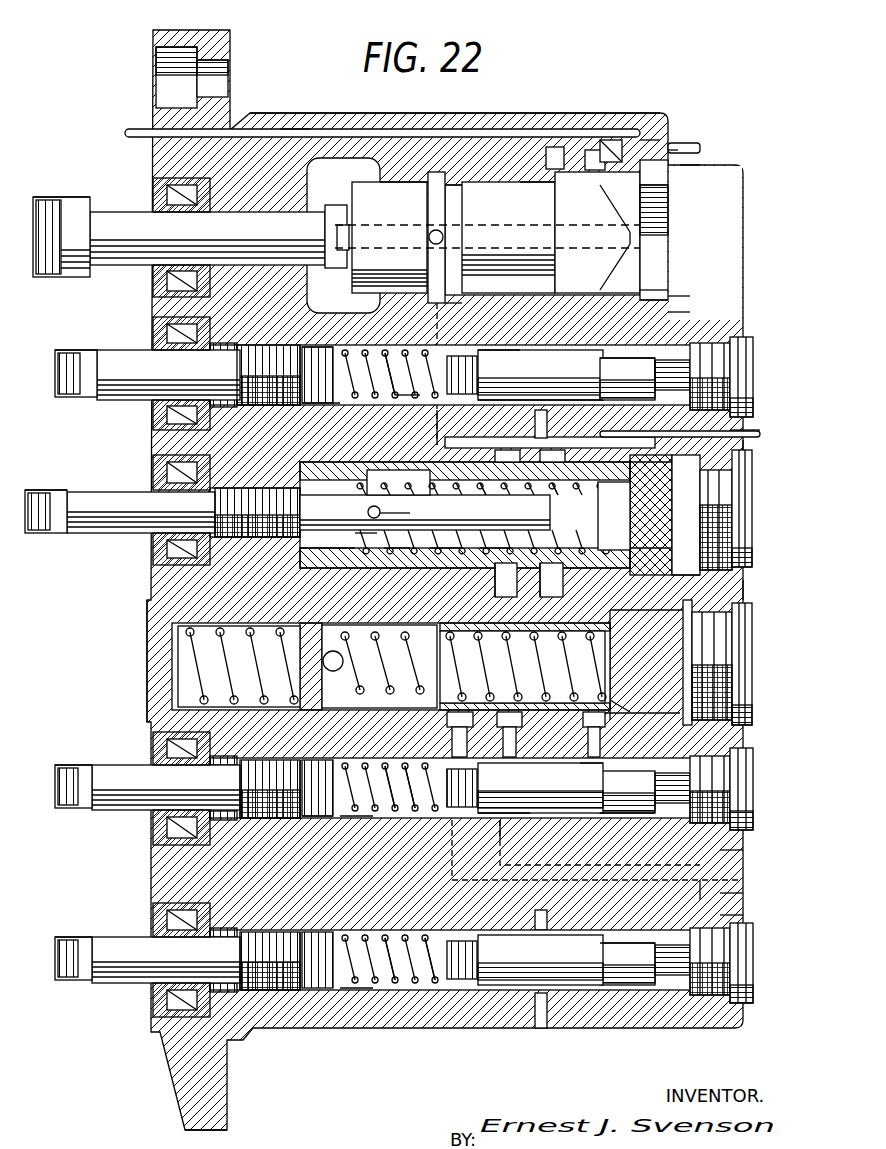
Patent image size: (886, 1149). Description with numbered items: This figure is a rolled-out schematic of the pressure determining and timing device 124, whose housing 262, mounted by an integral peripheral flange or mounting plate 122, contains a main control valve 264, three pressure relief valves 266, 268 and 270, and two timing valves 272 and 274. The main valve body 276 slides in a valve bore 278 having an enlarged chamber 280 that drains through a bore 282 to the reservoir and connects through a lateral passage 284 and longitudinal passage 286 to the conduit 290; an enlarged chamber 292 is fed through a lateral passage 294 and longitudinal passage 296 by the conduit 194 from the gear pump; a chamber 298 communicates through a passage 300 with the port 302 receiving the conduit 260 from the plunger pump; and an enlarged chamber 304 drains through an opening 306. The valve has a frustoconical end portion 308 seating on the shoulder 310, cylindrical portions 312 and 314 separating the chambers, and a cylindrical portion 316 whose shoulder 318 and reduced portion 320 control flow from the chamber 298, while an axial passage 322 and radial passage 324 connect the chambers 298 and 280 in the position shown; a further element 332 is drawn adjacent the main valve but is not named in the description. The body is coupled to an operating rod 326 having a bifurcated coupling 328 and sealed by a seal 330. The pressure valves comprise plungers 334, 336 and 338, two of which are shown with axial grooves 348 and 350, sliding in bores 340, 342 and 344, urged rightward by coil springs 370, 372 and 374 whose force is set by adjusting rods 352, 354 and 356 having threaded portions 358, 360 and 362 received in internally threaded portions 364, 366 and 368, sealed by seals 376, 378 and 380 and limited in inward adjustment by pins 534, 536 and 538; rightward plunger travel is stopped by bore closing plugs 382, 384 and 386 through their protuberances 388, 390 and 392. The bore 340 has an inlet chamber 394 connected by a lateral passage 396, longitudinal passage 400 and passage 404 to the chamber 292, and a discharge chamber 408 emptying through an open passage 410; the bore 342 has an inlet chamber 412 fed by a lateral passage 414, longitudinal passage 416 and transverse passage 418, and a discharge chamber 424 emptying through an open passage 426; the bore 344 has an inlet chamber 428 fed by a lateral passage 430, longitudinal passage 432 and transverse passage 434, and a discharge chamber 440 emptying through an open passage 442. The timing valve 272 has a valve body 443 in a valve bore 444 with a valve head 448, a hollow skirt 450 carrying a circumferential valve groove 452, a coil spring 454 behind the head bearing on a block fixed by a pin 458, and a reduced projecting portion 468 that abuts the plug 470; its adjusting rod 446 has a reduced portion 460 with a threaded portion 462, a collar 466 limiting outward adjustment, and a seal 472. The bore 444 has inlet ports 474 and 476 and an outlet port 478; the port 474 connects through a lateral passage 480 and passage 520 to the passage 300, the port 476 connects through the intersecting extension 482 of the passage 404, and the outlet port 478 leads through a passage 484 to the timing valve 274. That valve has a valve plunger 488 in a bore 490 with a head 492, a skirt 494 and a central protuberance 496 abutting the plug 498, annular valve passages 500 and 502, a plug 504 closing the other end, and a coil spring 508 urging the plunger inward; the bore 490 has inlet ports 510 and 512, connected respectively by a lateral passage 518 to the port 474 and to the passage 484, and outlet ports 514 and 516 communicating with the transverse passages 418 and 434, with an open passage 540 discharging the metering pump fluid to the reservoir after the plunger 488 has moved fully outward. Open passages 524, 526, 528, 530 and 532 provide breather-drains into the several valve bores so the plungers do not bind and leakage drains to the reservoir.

The mounting foot 122 is at (226, 1118).
The valve housing 124 is at (672, 102).
The rod 194 is at (705, 148).
The stem 260 is at (755, 443).
The cover plate 262 is at (258, 113).
The upper shaft assembly 264 is at (125, 200).
The second shaft assembly 266 is at (120, 345).
The fourth shaft assembly 268 is at (125, 763).
The fifth shaft assembly 270 is at (125, 930).
The third shaft assembly 272 is at (125, 482).
The spring chamber assembly 274 is at (140, 632).
The valve body 276 is at (540, 168).
The valve spool 278 is at (487, 195).
The bore 280 is at (690, 178).
The threaded plug 282 is at (660, 228).
The housing cap 284 is at (645, 140).
The rod guide 286 is at (292, 129).
The control rod 290 is at (135, 128).
The port 292 is at (590, 150).
The port 294 is at (560, 150).
The port 296 is at (678, 147).
The valve plate 298 is at (436, 172).
The passage 300 is at (430, 434).
The plunger 302 is at (458, 527).
The shoulder 304 is at (318, 185).
The stem 306 is at (595, 400).
The thread 308 is at (648, 208).
The plug face 310 is at (650, 290).
The port 312 is at (605, 140).
The passage 314 is at (453, 185).
The valve member 316 is at (364, 183).
The spline 318 is at (425, 285).
The groove 320 is at (410, 185).
The spool land 322 is at (578, 230).
The key 324 is at (430, 238).
The shaft 326 is at (130, 258).
The knurled head 328 is at (50, 268).
The bearing 330 is at (160, 185).
The passage 332 is at (456, 312).
The passage 334 is at (522, 360).
The passage 336 is at (505, 815).
The plunger 338 is at (568, 940).
The spring 340 is at (405, 348).
The spring 342 is at (415, 848).
The spring 344 is at (455, 992).
The stem 348 is at (600, 812).
The stem 350 is at (610, 950).
The shaft 352 is at (108, 393).
The shaft 354 is at (112, 808).
The shaft 356 is at (112, 980).
The threaded section 358 is at (258, 405).
The threaded section 360 is at (255, 820).
The threaded section 362 is at (268, 992).
The bushing 364 is at (292, 405).
The bushing 366 is at (293, 820).
The bushing 368 is at (328, 992).
The spring seat 370 is at (396, 400).
The spring seat 372 is at (365, 820).
The spring seat 374 is at (400, 995).
The bearing 376 is at (160, 335).
The bearing 378 is at (160, 740).
The bearing 380 is at (160, 905).
The nut 382 is at (745, 352).
The nut 384 is at (746, 758).
The nut 386 is at (746, 952).
The threaded insert 388 is at (675, 352).
The threaded insert 390 is at (720, 790).
The threaded insert 392 is at (745, 915).
The lock ring 394 is at (680, 312).
The washer 396 is at (682, 296).
The seat 400 is at (625, 330).
The passage 404 is at (458, 437).
The valve plunger 408 is at (528, 386).
The stem end 410 is at (740, 430).
The thread 412 is at (746, 800).
The thread 414 is at (745, 705).
The passage 416 is at (620, 713).
The valve plunger 418 is at (528, 800).
The stem 424 is at (580, 808).
The passage 426 is at (745, 852).
The passage 428 is at (745, 893).
The passage 430 is at (702, 890).
The passage 432 is at (525, 860).
The passage 434 is at (440, 865).
The passage 440 is at (545, 922).
The passage 442 is at (540, 1028).
The sleeve 443 is at (632, 520).
The spring retainer 444 is at (380, 482).
The shaft 446 is at (80, 530).
The threaded sleeve 448 is at (702, 524).
The spring 450 is at (492, 562).
The spring cage 452 is at (604, 520).
The spring 454 is at (398, 562).
The threaded section 458 is at (248, 568).
The collar 460 is at (358, 495).
The collar 462 is at (340, 545).
The wall 466 is at (330, 565).
The sleeve flange 468 is at (700, 500).
The nut 470 is at (748, 538).
The bearing 472 is at (160, 462).
The thread 474 is at (748, 560).
The spring 476 is at (552, 512).
The spring 478 is at (495, 492).
The sleeve end 480 is at (640, 490).
The passage 482 is at (570, 430).
The spring 484 is at (523, 667).
The wall 488 is at (650, 612).
The spring 490 is at (438, 570).
The flange 492 is at (745, 616).
The passage 494 is at (520, 585).
The threaded sleeve 496 is at (695, 662).
The nut 498 is at (745, 678).
The block 500 is at (660, 625).
The passage 502 is at (458, 740).
The spring chamber 504 is at (176, 660).
The spring 508 is at (196, 680).
The housing wall 510 is at (752, 600).
The spring seat 512 is at (477, 782).
The passage 514 is at (565, 566).
The passage 516 is at (450, 725).
The flange 518 is at (690, 567).
The rod 520 is at (750, 433).
The spring guide 524 is at (356, 345).
The pin 526 is at (410, 513).
The passage 528 is at (450, 880).
The spring 530 is at (397, 810).
The spring cup 532 is at (340, 700).
The spring guide 534 is at (322, 408).
The spring guide 536 is at (332, 818).
The spring guide 538 is at (385, 990).
The passage 540 is at (618, 705).